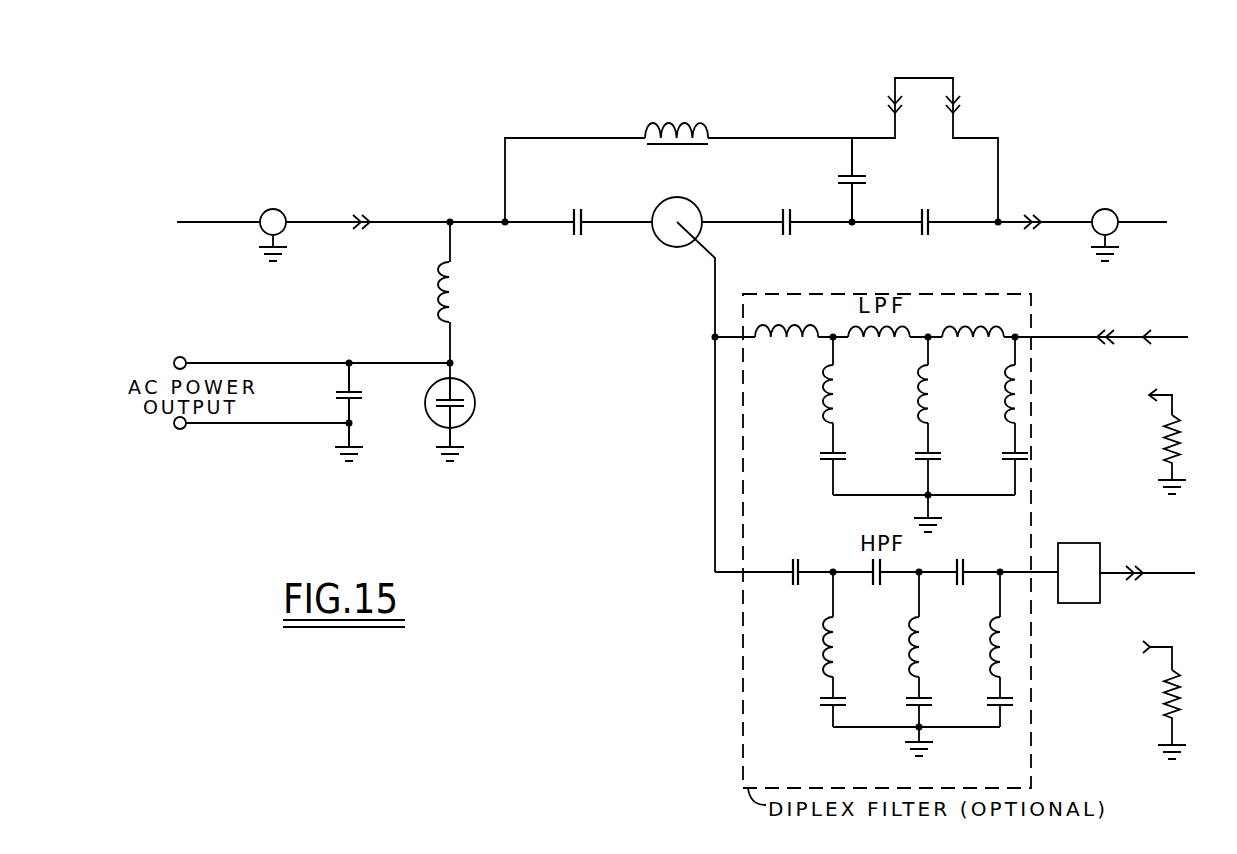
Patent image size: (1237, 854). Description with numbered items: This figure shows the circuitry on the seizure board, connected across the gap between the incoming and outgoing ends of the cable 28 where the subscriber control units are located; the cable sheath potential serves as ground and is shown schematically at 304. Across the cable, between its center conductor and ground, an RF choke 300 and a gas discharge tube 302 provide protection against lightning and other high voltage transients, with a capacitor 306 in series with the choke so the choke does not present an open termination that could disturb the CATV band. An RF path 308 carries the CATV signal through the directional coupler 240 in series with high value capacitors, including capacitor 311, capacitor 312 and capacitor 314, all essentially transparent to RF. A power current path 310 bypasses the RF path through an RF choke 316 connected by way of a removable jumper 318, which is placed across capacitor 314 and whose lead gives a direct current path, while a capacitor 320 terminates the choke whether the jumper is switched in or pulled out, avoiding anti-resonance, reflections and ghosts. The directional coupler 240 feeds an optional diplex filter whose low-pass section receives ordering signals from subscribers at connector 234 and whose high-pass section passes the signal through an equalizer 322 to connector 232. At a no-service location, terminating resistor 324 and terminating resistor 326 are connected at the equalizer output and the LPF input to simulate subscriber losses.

The cable 28 is at (188, 222).
The cable sheath 304 is at (281, 211).
The RF choke 300 is at (452, 292).
The gas discharge tube 302 is at (468, 387).
The capacitor 306 is at (345, 399).
The RF path 308 is at (613, 224).
The power current path 310 is at (780, 136).
The capacitor 311 is at (585, 215).
The capacitor 312 is at (792, 235).
The capacitor 314 is at (930, 237).
The RF choke 316 is at (672, 120).
The removable jumper 318 is at (925, 78).
The capacitor 320 is at (860, 176).
The directional coupler 240 is at (698, 206).
The connector 234 is at (1110, 327).
The connector 232 is at (1130, 582).
The equalizer 322 is at (1082, 543).
The terminating resistor 324 is at (1166, 441).
The terminating resistor 326 is at (1168, 712).